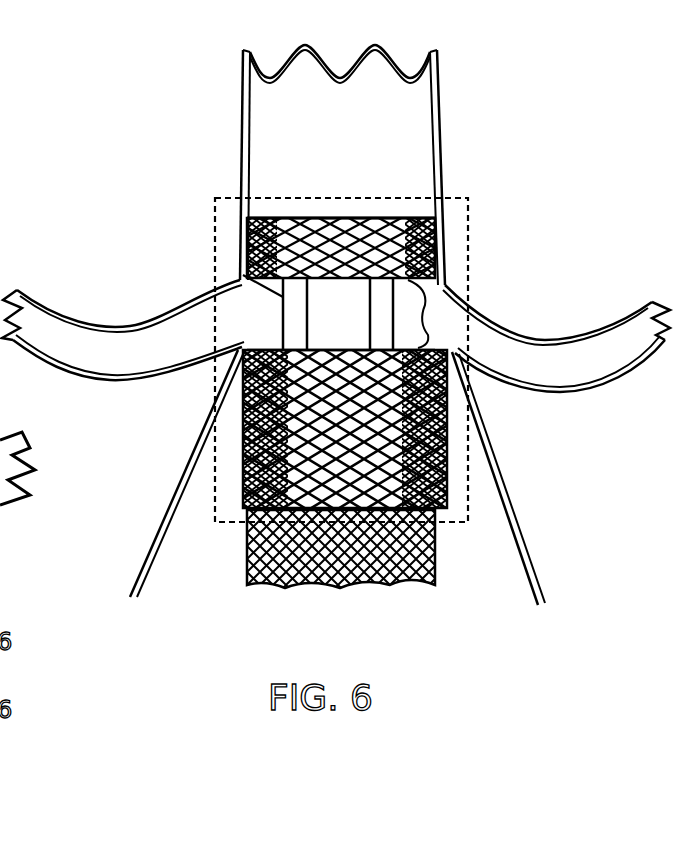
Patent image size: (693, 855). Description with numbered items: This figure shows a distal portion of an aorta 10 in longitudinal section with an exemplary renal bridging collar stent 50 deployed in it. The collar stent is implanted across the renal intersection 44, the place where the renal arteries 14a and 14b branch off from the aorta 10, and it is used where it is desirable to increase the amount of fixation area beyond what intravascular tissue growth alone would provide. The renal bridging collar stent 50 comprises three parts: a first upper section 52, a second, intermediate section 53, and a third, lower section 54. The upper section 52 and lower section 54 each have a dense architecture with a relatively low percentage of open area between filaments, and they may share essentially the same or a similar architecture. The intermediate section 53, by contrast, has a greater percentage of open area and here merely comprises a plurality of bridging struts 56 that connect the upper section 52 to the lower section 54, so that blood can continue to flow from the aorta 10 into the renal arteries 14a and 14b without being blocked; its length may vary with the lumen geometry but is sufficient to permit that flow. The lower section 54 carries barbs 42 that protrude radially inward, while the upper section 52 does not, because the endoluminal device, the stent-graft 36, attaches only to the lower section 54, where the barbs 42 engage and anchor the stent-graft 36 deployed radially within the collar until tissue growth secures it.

The aorta 10 is at (237, 197).
The renal artery 14a is at (131, 353).
The renal artery 14b is at (512, 348).
The stent-graft 36 is at (435, 550).
The barbs 42 is at (240, 462).
The renal intersection 44 is at (357, 328).
The renal bridging collar stent 50 is at (470, 218).
The first upper section 52 is at (410, 208).
The intermediate section 53 is at (433, 314).
The third lower section 54 is at (455, 430).
The bridging struts 56 is at (232, 268).